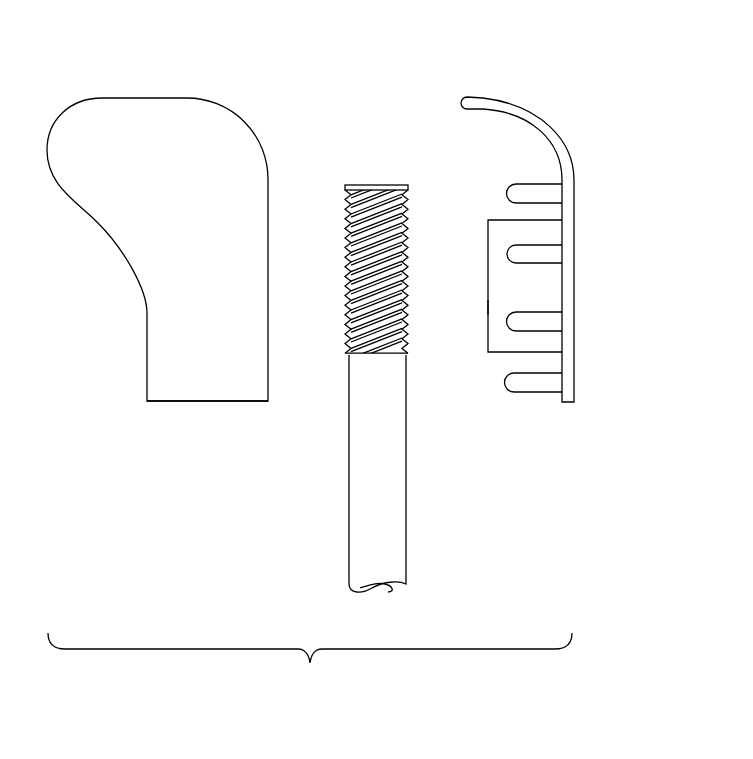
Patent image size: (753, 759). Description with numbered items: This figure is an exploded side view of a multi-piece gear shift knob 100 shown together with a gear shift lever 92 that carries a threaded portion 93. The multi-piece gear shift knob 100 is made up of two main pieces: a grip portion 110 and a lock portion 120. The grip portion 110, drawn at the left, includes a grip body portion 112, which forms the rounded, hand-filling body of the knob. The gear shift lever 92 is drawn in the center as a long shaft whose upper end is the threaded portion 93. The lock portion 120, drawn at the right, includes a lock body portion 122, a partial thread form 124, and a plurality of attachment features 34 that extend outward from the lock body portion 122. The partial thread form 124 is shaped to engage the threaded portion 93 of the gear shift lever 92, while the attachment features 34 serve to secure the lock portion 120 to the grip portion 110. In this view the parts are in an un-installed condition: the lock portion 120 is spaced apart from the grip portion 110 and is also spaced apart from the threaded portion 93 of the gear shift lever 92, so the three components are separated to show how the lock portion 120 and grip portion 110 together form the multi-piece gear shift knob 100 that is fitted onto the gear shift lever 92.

The multi-piece gear shift knob 100 is at (580, 106).
The grip portion 110 is at (232, 90).
The grip body portion 112 is at (202, 402).
The gear shift lever 92 is at (431, 374).
The threaded portion 93 is at (386, 342).
The lock portion 120 is at (577, 188).
The lock body portion 122 is at (575, 279).
The partial thread form 124 is at (488, 291).
The attachment features 34 is at (535, 398).